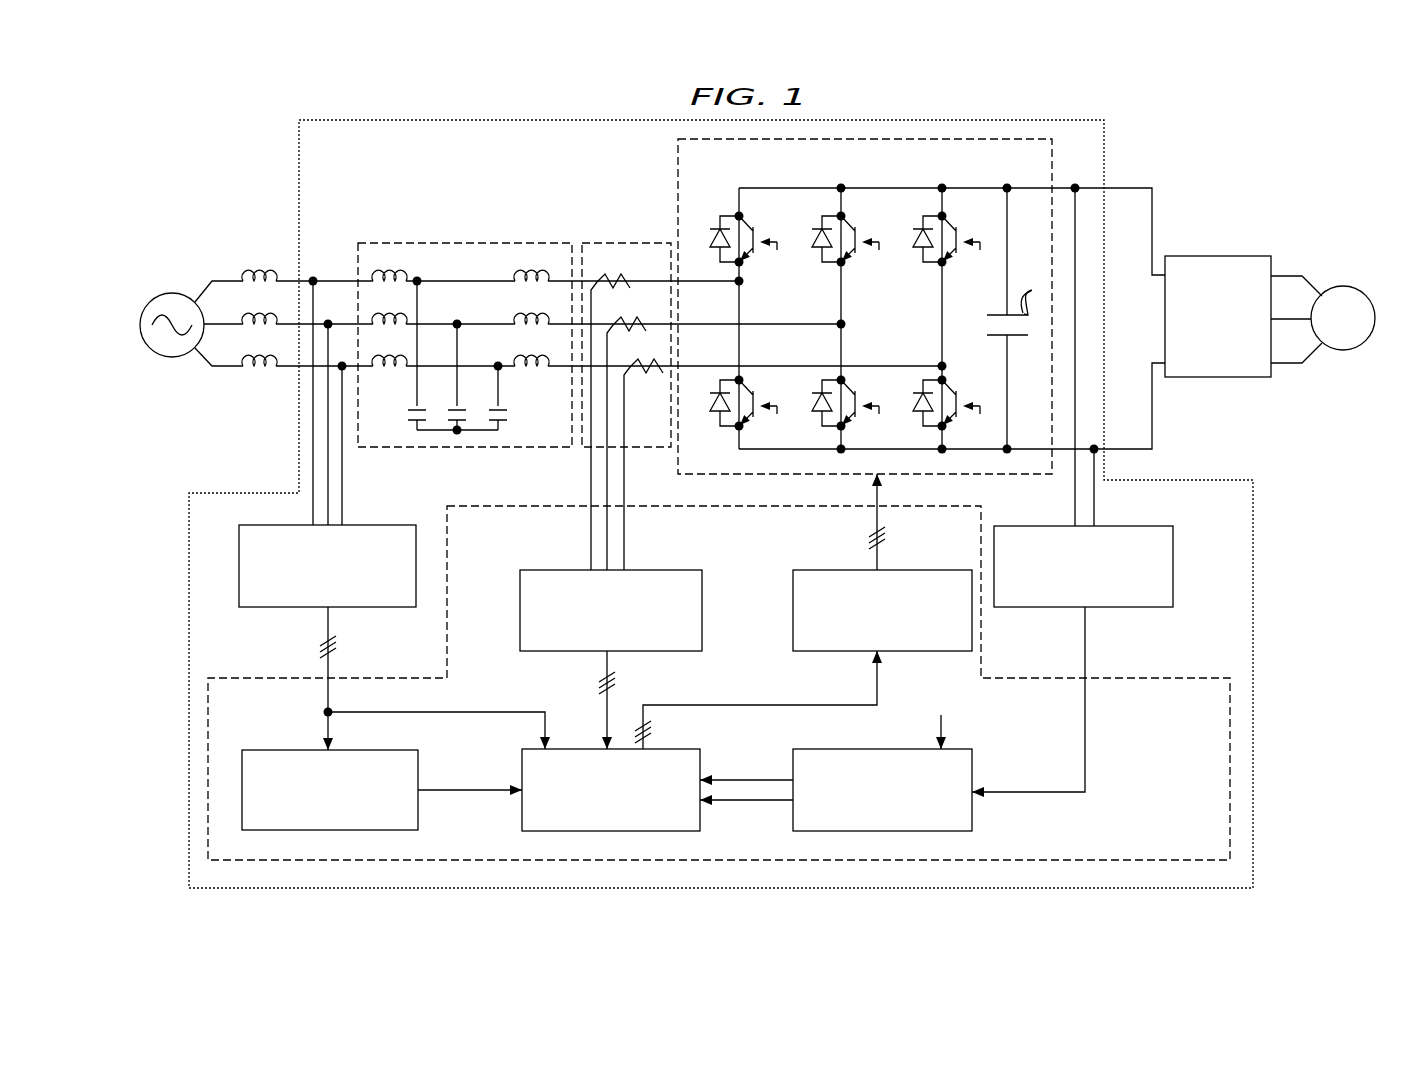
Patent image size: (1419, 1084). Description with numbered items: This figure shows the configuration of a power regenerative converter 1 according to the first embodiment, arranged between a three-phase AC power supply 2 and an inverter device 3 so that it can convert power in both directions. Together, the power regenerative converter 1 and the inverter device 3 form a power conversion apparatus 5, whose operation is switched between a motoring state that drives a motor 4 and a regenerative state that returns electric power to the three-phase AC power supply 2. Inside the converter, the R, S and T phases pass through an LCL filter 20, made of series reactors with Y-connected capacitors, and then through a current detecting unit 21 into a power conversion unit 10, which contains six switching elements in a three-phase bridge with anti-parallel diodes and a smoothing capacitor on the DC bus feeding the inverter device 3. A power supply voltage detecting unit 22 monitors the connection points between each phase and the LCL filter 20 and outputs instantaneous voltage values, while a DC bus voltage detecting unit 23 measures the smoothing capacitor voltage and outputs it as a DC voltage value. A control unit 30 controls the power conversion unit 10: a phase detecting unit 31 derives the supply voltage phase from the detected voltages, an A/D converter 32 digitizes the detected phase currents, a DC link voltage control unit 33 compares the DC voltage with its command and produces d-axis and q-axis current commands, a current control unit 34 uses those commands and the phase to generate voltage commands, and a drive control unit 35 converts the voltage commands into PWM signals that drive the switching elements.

The power regenerative converter 1 is at (1073, 119).
The three-phase AC power supply 2 is at (178, 275).
The inverter device 3 is at (1246, 238).
The motor 4 is at (1351, 268).
The power conversion apparatus 5 is at (1203, 187).
The power conversion unit 10 is at (980, 138).
The LCL filter 20 is at (445, 243).
The current detecting unit 21 is at (632, 228).
The power supply voltage detecting unit 22 is at (389, 510).
The DC bus voltage detecting unit 23 is at (1144, 508).
The control unit 30 is at (490, 505).
The phase detecting unit 31 is at (389, 731).
The A/D converter 32 is at (670, 553).
The DC link voltage control unit 33 is at (882, 731).
The current control unit 34 is at (569, 730).
The drive control unit 35 is at (944, 551).